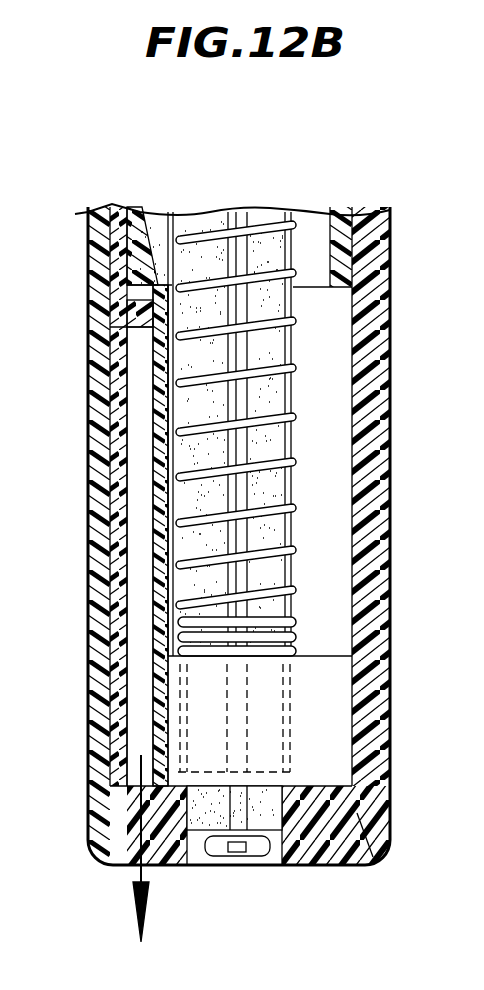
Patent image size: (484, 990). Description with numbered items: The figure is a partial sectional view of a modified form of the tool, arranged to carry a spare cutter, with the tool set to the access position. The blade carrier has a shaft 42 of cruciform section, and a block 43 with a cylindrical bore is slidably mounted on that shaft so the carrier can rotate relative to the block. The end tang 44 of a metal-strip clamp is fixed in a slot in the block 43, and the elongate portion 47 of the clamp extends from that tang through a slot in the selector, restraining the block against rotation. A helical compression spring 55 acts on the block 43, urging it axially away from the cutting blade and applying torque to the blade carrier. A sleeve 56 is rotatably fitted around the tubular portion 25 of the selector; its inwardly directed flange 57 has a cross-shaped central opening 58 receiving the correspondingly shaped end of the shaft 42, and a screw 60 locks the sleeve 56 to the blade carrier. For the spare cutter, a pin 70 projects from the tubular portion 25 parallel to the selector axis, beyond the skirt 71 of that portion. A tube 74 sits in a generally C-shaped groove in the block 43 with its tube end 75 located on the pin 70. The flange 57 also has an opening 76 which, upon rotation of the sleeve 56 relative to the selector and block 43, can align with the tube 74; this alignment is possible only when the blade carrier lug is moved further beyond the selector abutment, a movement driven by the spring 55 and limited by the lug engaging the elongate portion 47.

The tubular portion 25 is at (327, 217).
The shaft 42 is at (265, 235).
The block 43 is at (323, 750).
The end tang 44 is at (313, 800).
The elongate portion 47 is at (177, 504).
The helical compression spring 55 is at (205, 232).
The sleeve 56 is at (97, 246).
The flange 57 is at (365, 848).
The cross-shaped central opening 58 is at (195, 870).
The screw 60 is at (250, 870).
The pin 70 is at (140, 300).
The skirt 71 is at (318, 290).
The tube 74 is at (145, 668).
The tube end 75 is at (118, 330).
The opening 76 is at (133, 860).